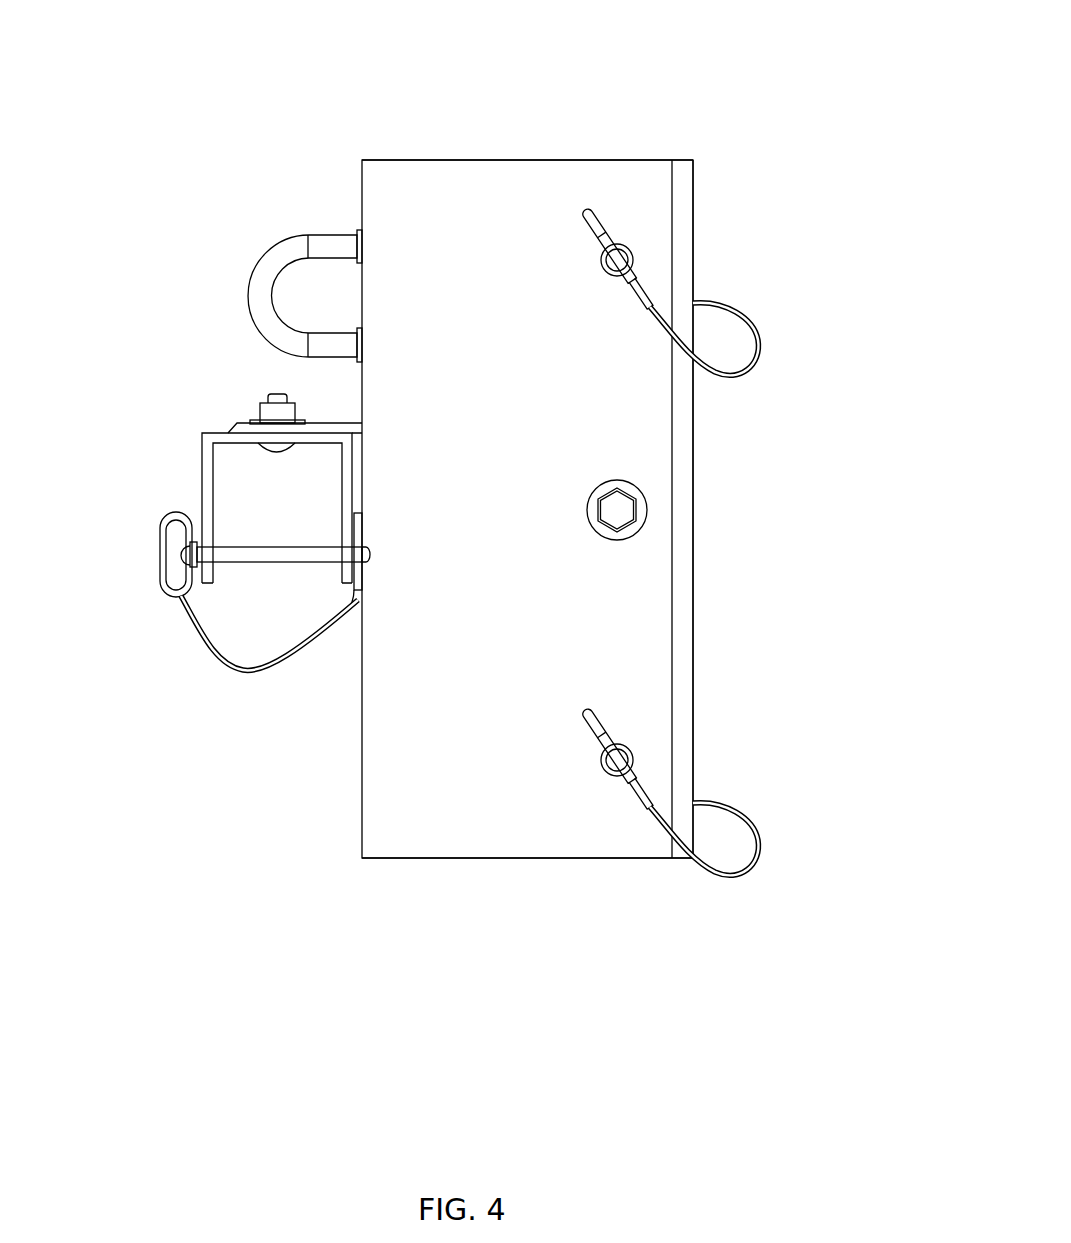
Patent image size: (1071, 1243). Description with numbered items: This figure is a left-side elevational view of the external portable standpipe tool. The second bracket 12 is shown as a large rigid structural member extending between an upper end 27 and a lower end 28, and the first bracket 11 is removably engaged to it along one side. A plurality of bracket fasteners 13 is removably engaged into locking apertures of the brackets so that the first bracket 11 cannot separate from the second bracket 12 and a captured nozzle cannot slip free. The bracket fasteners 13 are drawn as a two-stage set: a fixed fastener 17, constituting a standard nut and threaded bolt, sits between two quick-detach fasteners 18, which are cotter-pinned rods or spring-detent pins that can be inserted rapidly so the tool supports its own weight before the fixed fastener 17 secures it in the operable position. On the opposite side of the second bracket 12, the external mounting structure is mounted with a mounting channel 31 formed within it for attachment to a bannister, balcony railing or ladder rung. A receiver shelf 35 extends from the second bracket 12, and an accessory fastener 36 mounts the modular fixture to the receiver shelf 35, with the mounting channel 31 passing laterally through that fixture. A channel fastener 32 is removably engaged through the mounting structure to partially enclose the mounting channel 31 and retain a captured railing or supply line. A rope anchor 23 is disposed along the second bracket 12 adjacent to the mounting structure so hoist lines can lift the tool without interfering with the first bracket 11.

The first bracket 11 is at (680, 202).
The second bracket 12 is at (410, 180).
The plurality of bracket fasteners 13 is at (603, 541).
The fixed fastener 17 is at (617, 512).
The quick-detach fastener 18 is at (617, 262).
The plurality of rope anchors 23 is at (280, 255).
The upper end 27 is at (573, 122).
The lower end 28 is at (518, 883).
The mounting channel 31 is at (237, 502).
The plurality of channel fasteners 32 is at (163, 598).
The receiver shelf 35 is at (237, 430).
The accessory fastener 36 is at (275, 412).